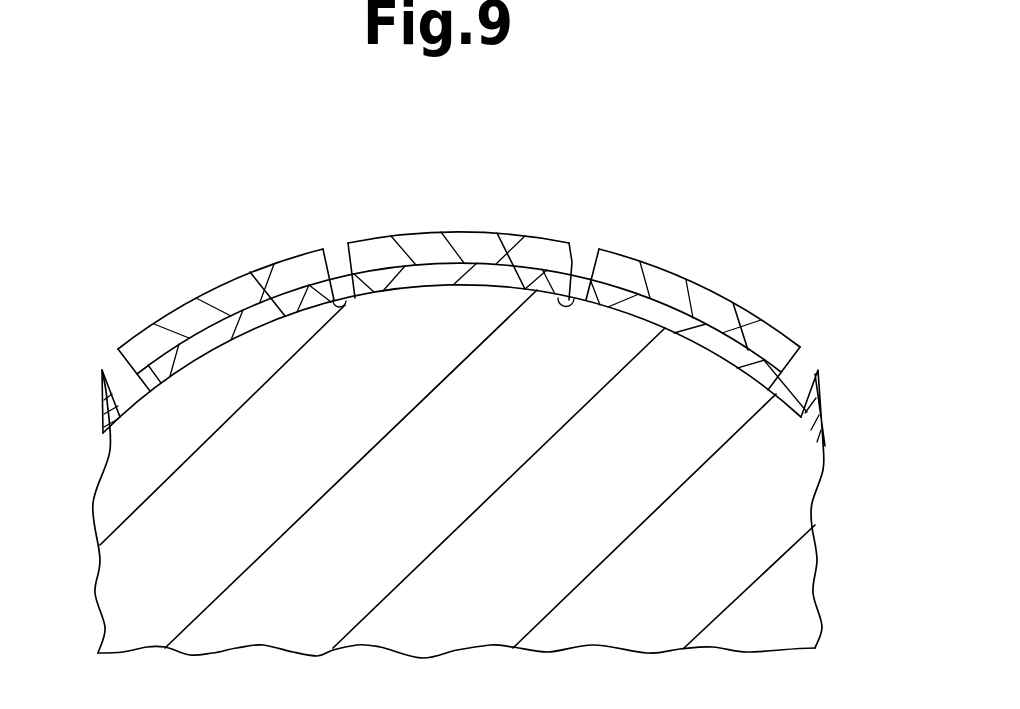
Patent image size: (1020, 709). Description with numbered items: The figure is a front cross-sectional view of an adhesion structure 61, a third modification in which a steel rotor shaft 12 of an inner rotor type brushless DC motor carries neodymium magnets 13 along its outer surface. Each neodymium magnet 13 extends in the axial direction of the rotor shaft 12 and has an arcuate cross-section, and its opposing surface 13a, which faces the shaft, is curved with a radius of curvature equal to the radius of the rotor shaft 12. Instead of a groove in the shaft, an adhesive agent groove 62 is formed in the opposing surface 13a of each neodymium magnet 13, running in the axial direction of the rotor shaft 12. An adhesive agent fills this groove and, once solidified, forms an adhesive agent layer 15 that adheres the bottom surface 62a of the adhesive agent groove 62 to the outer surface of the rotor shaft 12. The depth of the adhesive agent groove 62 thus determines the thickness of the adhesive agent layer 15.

The adhesion structure 61 is at (827, 218).
The rotor shaft 12 is at (797, 495).
The neodymium magnet 13 is at (222, 297).
The opposing surface 13a is at (341, 300).
The adhesive agent layer 15 is at (747, 313).
The adhesive agent groove 62 is at (662, 303).
The bottom surface 62a is at (278, 319).